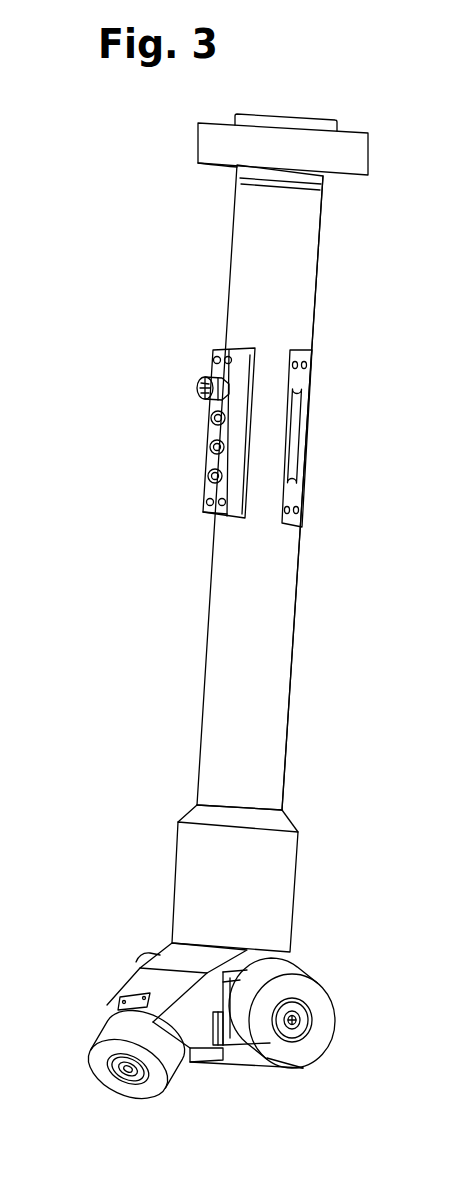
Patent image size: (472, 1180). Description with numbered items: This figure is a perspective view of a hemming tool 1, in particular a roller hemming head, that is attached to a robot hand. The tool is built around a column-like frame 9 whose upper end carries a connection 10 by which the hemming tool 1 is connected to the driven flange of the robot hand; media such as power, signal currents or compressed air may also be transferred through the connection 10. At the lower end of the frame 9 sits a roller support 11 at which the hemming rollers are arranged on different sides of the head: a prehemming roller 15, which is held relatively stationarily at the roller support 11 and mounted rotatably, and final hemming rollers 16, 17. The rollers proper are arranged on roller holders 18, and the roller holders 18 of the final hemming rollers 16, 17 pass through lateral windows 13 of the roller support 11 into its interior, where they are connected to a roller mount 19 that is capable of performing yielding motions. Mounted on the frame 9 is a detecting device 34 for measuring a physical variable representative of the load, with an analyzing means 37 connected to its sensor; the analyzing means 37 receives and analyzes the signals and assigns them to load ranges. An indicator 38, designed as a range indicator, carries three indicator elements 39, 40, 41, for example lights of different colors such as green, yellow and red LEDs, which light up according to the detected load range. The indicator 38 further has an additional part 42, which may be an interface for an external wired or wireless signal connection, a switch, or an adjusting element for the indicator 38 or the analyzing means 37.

The hemming tool 1 is at (236, 213).
The frame 9 is at (222, 593).
The connection 10 is at (348, 152).
The roller support 11 is at (298, 838).
The window 13 is at (238, 980).
The prehemming roller 15 is at (148, 1088).
The final hemming roller 16 is at (142, 957).
The final hemming roller 17 is at (322, 1003).
The roller holder 18 is at (260, 940).
The roller mount 19 is at (222, 905).
The detecting device 34 is at (303, 592).
The analyzing means 37 is at (240, 408).
The indicator 38 is at (243, 358).
The indicator element 39 is at (210, 477).
The indicator element 40 is at (213, 447).
The indicator element 41 is at (216, 417).
The additional part 42 is at (214, 384).